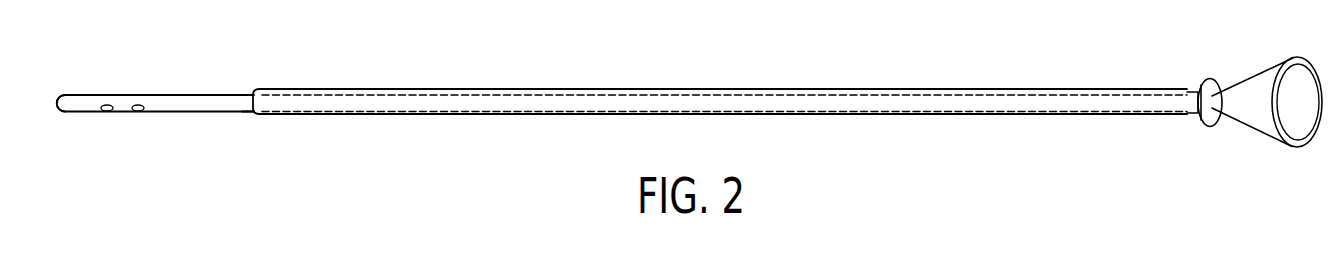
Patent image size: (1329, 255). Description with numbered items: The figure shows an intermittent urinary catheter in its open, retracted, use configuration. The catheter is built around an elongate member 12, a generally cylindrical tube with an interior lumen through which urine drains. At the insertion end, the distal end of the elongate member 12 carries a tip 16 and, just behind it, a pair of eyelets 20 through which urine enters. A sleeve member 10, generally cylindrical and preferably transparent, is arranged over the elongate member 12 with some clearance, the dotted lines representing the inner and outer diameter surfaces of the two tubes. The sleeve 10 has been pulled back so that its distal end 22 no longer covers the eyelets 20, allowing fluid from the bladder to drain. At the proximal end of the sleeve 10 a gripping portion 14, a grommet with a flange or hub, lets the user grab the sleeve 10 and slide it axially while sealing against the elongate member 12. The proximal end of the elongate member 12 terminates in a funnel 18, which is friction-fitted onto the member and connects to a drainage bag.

The sleeve member 10 is at (418, 89).
The elongate member 12 is at (175, 102).
The gripping portion 14 is at (1185, 103).
The tip 16 is at (58, 93).
The funnel 18 is at (1257, 90).
The eyelets 20 is at (105, 113).
The distal end of the sleeve 22 is at (244, 112).